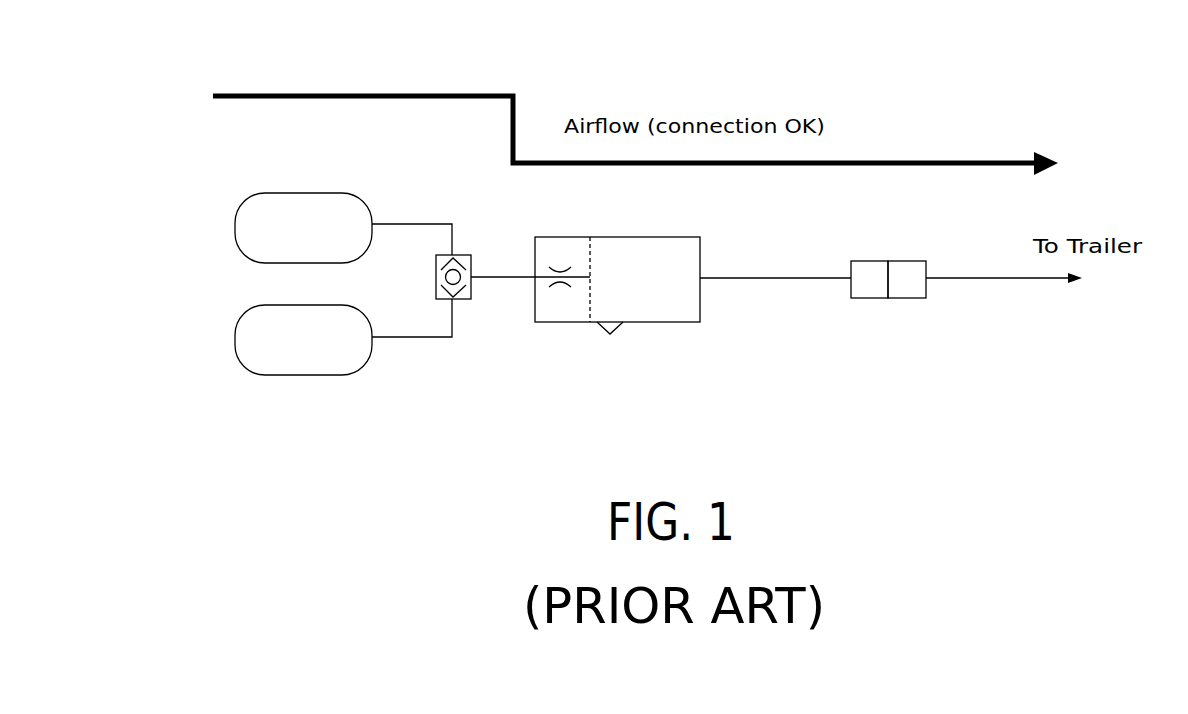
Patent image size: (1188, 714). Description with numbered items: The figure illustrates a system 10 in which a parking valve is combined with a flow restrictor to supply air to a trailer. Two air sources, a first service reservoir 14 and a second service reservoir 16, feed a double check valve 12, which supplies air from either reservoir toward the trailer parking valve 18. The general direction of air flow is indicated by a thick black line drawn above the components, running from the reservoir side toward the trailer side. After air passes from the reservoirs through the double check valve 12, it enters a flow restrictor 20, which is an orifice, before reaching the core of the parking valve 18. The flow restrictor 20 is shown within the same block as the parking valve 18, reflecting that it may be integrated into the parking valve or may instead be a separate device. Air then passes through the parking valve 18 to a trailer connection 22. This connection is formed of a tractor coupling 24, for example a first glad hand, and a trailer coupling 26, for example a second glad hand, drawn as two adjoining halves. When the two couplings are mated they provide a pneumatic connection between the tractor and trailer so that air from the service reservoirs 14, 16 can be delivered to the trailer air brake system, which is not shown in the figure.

The system 10 is at (898, 22).
The double check valve 12 is at (513, 260).
The first service reservoir 14 is at (308, 228).
The second service reservoir 16 is at (308, 335).
The trailer parking valve 18 is at (693, 297).
The flow restrictor 20 is at (543, 297).
The trailer connection 22 is at (888, 272).
The tractor coupling 24 is at (842, 298).
The trailer coupling 26 is at (933, 298).